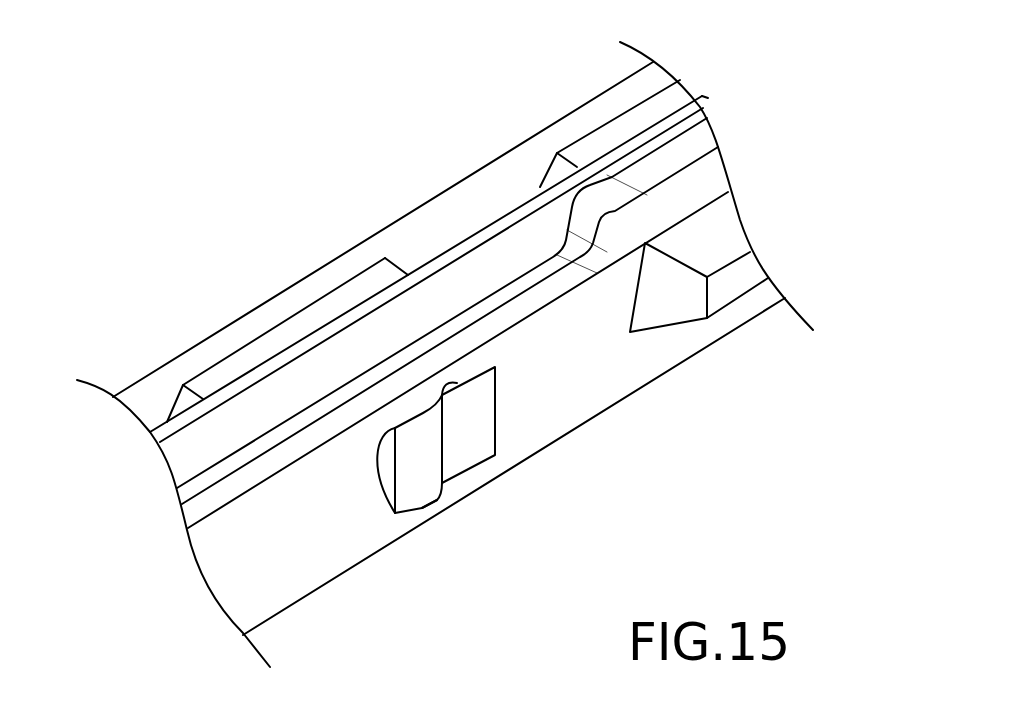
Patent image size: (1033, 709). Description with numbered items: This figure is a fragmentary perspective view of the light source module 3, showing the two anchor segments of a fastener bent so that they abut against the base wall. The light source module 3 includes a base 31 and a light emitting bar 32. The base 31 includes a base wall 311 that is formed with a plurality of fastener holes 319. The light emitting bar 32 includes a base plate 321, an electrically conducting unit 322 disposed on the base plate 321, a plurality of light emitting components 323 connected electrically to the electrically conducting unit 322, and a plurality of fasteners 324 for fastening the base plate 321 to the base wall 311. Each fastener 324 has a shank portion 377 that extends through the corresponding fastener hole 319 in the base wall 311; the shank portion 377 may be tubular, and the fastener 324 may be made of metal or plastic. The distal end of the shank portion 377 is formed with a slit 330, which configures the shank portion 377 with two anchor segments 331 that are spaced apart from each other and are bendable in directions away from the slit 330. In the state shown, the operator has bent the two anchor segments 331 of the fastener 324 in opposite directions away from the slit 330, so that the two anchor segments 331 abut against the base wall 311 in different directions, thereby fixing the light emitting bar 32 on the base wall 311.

The light source module 3 is at (343, 198).
The base 31 is at (466, 348).
The base wall 311 is at (722, 331).
The light emitting bar 32 is at (434, 265).
The base plate 321 is at (537, 209).
The electrically conducting unit 322 is at (477, 227).
The light emitting components 323 is at (252, 340).
The fastener holes 319 is at (443, 391).
The fastener 324 is at (499, 490).
The anchor segments 331 is at (483, 435).
The slit 330 is at (443, 478).
The shank portion 377 is at (436, 531).